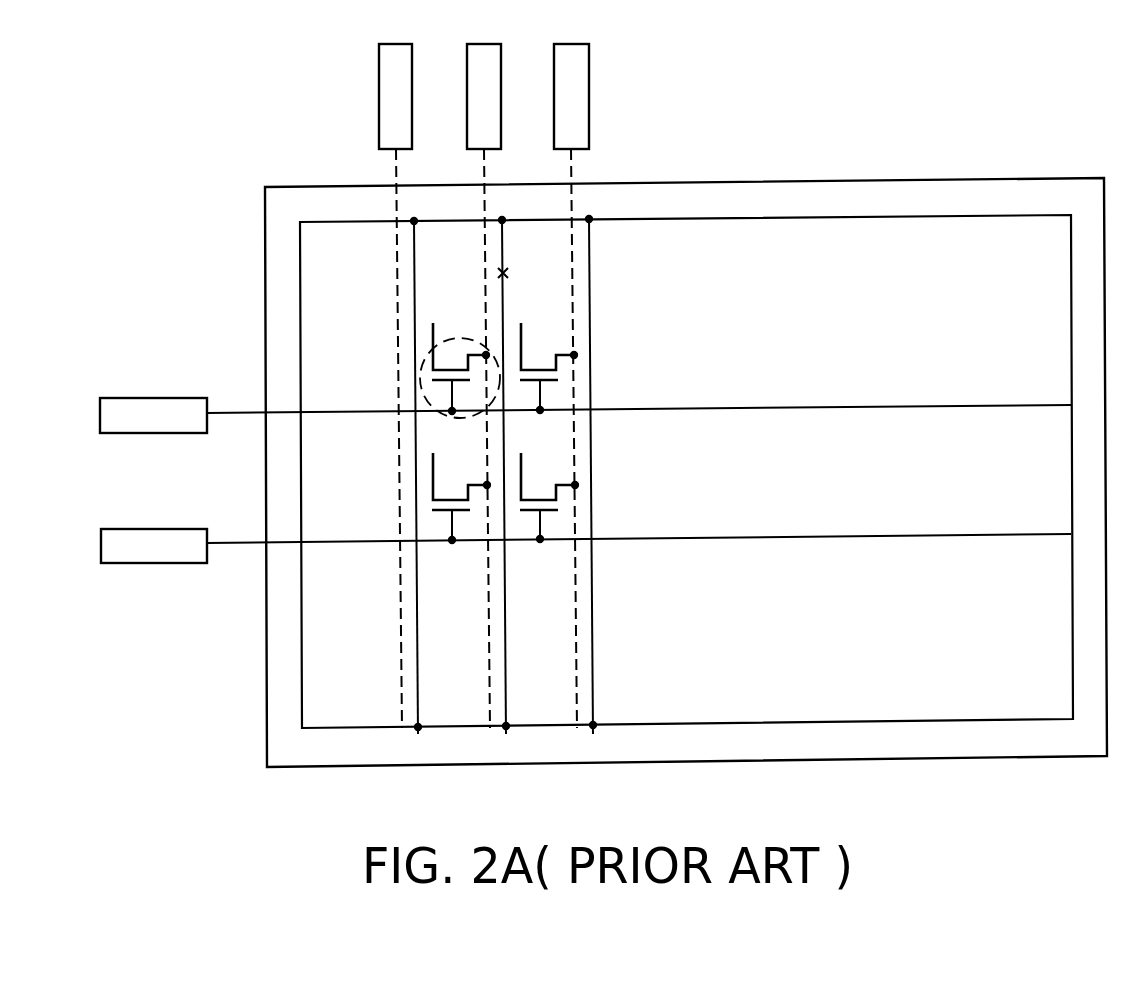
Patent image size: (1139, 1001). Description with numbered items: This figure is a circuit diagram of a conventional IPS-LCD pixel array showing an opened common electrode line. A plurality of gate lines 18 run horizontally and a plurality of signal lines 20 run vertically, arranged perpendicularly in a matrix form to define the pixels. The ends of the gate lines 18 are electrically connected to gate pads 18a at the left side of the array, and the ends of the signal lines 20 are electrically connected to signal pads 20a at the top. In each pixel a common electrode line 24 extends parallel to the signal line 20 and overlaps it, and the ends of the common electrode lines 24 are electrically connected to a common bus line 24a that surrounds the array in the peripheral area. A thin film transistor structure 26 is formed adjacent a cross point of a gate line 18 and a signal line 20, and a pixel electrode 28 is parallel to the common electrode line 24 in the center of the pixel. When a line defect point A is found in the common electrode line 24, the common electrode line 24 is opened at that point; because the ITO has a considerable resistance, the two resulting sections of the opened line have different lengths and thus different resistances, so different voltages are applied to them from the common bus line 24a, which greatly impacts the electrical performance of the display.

The gate line 18 is at (781, 405).
The gate pad 18a is at (157, 408).
The signal line 20 is at (397, 292).
The signal pad 20a is at (395, 100).
The common electrode line 24 is at (592, 294).
The common bus line 24a is at (798, 215).
The thin film transistor structure 26 is at (455, 337).
The pixel electrode 28 is at (523, 342).
The line defect point A is at (513, 258).